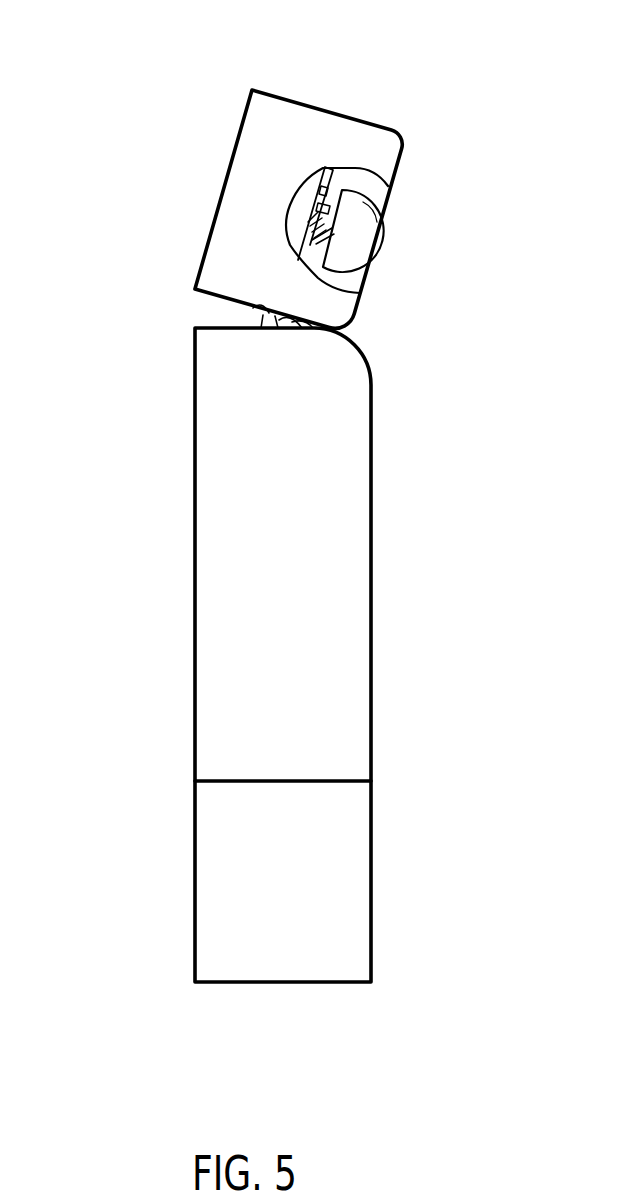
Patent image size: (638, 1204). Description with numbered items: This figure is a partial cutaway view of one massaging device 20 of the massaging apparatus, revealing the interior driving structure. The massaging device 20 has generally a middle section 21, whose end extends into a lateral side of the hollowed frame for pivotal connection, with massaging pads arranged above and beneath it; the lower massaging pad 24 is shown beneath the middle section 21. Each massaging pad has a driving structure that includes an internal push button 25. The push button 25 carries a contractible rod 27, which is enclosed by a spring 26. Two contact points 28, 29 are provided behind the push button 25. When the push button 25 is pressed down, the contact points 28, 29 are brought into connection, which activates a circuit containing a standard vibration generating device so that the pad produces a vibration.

The massaging device 20 is at (249, 655).
The middle section 21 is at (338, 527).
The lower massaging pad 24 is at (340, 876).
The push button 25 is at (358, 245).
The spring 26 is at (313, 222).
The contractible rod 27 is at (308, 226).
The contact point 28 is at (330, 203).
The contact point 29 is at (327, 207).